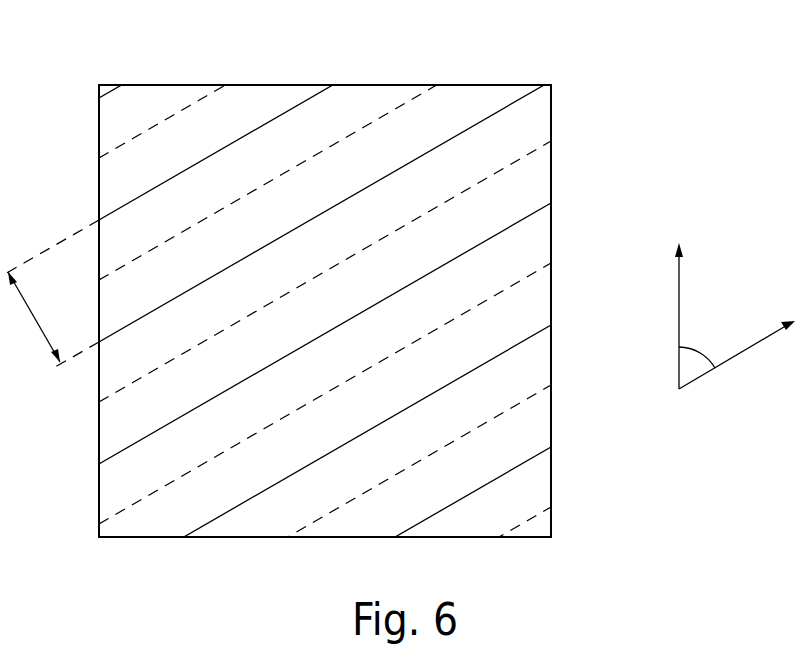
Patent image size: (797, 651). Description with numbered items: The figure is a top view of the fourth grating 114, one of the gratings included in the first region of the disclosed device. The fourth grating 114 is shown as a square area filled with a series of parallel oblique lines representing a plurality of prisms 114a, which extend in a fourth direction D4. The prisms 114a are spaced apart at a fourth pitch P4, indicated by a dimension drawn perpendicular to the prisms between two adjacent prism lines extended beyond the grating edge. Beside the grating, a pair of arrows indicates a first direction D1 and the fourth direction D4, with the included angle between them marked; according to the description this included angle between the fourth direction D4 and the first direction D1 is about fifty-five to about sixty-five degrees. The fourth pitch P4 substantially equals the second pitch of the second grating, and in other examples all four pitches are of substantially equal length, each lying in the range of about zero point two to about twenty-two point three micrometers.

The fourth grating 114 is at (373, 325).
The prisms 114a is at (253, 105).
The fourth pitch P4 is at (51, 293).
The first direction D1 is at (658, 316).
The fourth direction D4 is at (737, 355).